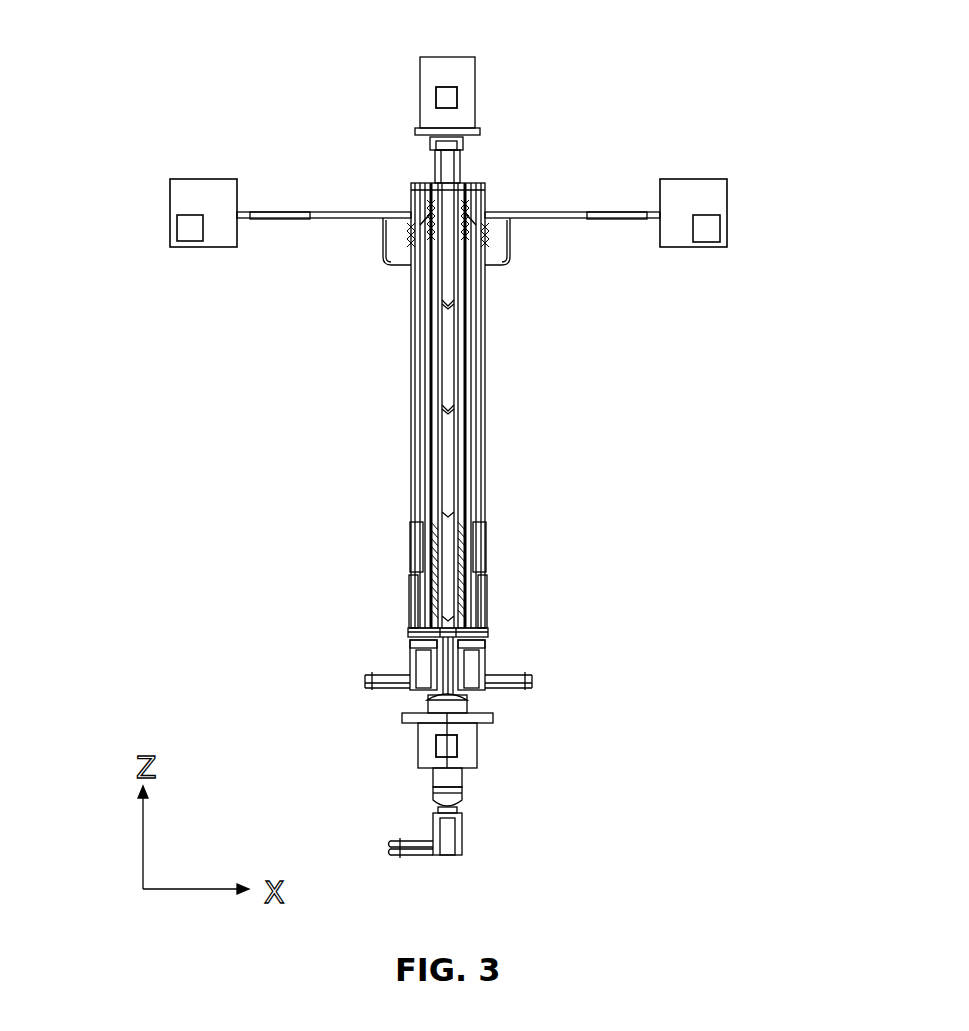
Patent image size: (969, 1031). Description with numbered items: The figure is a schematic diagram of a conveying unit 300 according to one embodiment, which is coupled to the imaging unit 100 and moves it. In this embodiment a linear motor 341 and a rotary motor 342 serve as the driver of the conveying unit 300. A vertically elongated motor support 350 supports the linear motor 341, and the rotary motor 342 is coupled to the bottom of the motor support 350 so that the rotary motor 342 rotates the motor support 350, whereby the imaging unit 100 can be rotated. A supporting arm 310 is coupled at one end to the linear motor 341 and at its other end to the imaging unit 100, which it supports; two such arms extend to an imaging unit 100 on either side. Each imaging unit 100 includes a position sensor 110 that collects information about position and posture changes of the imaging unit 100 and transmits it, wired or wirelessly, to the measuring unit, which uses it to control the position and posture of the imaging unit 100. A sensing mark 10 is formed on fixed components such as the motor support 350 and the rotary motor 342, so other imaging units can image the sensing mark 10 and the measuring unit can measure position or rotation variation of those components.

The conveying unit 300 is at (727, 42).
The sensing mark 10 is at (442, 101).
The motor support 350 is at (450, 162).
The linear motor 341 is at (420, 415).
The rotary motor 342 is at (472, 745).
The supporting arm 310 is at (336, 218).
The imaging unit 100 is at (176, 197).
The position sensor 110 is at (190, 232).